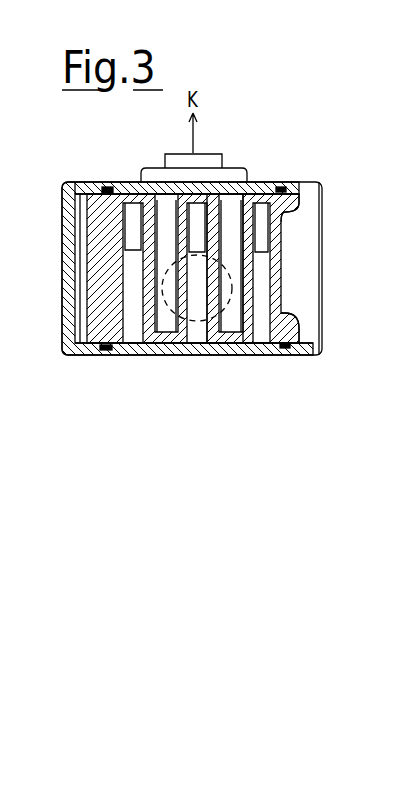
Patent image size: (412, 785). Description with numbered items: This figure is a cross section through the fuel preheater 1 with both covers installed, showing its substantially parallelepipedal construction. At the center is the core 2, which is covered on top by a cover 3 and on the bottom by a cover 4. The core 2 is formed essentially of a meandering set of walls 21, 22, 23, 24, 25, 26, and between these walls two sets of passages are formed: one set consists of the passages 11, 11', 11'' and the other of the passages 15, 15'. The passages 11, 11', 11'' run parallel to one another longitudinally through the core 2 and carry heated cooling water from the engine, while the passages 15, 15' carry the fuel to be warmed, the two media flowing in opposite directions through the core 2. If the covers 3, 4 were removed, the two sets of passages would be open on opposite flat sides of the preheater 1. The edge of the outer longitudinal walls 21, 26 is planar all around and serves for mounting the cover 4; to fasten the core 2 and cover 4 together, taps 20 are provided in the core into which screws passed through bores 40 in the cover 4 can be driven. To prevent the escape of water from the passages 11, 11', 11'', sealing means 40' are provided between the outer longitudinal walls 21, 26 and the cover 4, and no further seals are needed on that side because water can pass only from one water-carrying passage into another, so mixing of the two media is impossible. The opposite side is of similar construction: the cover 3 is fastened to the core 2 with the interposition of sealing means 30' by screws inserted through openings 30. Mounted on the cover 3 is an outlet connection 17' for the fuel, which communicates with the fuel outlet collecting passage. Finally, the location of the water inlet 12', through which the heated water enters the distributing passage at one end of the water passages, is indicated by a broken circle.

The preheater 1 is at (290, 95).
The core 2 is at (347, 252).
The cover 3 is at (120, 183).
The cover 4 is at (166, 350).
The passage 11 is at (153, 321).
The passage 11' is at (212, 321).
The passage 11'' is at (268, 321).
The inlet 12' is at (330, 219).
The passage 15 is at (187, 150).
The passage 15' is at (251, 228).
The outlet connection 17' is at (209, 130).
The tap 20 is at (83, 297).
The wall 21 is at (140, 206).
The wall 22 is at (178, 225).
The wall 23 is at (178, 245).
The wall 24 is at (245, 300).
The wall 25 is at (250, 312).
The wall 26 is at (282, 315).
The opening 30 is at (65, 181).
The sealing means 30' is at (193, 168).
The bore 40 is at (86, 377).
The sealing means 40' is at (218, 376).